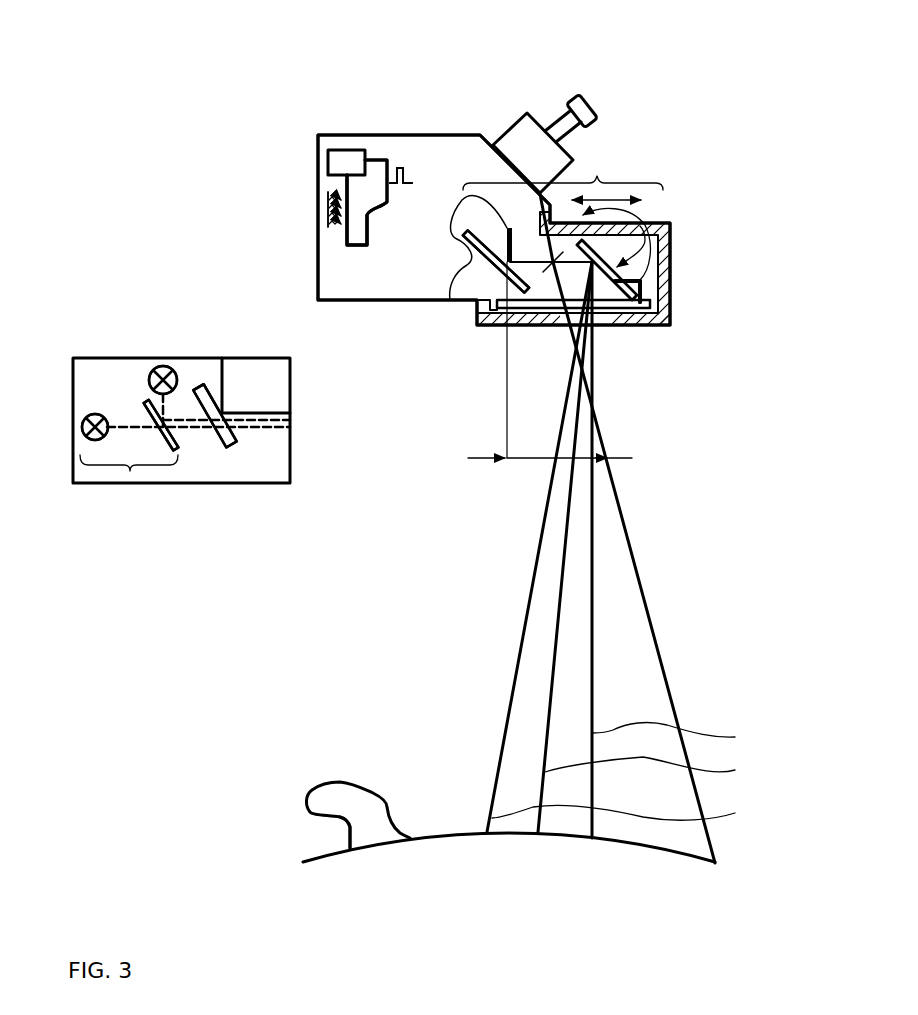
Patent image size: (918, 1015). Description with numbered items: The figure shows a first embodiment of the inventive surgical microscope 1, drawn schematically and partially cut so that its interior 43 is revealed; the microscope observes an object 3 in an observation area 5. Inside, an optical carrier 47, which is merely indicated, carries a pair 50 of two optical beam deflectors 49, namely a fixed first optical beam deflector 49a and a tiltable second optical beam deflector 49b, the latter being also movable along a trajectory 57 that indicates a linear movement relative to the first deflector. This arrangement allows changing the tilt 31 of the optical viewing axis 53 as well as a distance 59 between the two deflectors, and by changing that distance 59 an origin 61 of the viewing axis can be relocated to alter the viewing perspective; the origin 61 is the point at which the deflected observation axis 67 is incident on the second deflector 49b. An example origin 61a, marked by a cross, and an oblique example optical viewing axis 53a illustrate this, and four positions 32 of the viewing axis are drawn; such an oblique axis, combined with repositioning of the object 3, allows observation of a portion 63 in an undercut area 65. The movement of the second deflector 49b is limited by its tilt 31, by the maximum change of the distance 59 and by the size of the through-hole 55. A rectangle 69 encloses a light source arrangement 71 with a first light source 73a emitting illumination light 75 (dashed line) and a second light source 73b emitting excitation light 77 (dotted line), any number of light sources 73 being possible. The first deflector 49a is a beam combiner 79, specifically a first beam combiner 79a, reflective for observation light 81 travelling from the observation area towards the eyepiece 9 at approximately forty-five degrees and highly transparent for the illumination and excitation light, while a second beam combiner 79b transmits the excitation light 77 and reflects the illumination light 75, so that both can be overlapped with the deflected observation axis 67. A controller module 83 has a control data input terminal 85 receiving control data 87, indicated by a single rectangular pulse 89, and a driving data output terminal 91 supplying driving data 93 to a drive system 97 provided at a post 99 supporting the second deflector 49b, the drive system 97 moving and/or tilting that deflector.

The surgical microscope 1 is at (274, 68).
The object 3 is at (463, 837).
The observation area 5 is at (529, 794).
The eyepiece 9 is at (603, 108).
The tilt 31 is at (606, 633).
The positions of the optical viewing axis 32 is at (629, 778).
The interior 43 is at (387, 197).
The optical carrier 47 is at (620, 325).
The optical beam deflector 49 is at (550, 265).
The first optical beam deflector 49a is at (457, 322).
The second optical beam deflector 49b is at (596, 238).
The pair of optical beam deflectors 50 is at (563, 169).
The optical viewing axis 53 is at (565, 597).
The example optical viewing axis 53a is at (665, 680).
The through-hole 55 is at (608, 327).
The trajectory 57 is at (617, 200).
The distance 59 is at (622, 455).
The origin 61 is at (586, 264).
The example origin 61a is at (537, 212).
The portion 63 is at (337, 828).
The undercut area 65 is at (338, 778).
The deflected observation axis 67 is at (487, 225).
The rectangle 69 is at (250, 358).
The light source arrangement 71 is at (130, 472).
The light source 73 is at (129, 403).
The first light source 73a is at (152, 393).
The second light source 73b is at (65, 473).
The illumination light 75 is at (146, 400).
The excitation light 77 is at (122, 425).
The beam combiner 79 is at (214, 415).
The first beam combiner 79a is at (233, 450).
The second beam combiner 79b is at (177, 447).
The observation light 81 is at (568, 550).
The controller module 83 is at (343, 150).
The control data input terminal 85 is at (370, 152).
The control data 87 is at (400, 167).
The single rectangular pulse 89 is at (401, 175).
The driving data output terminal 91 is at (339, 178).
The driving data 93 is at (327, 205).
The drive system 97 is at (647, 284).
The post 99 is at (627, 291).